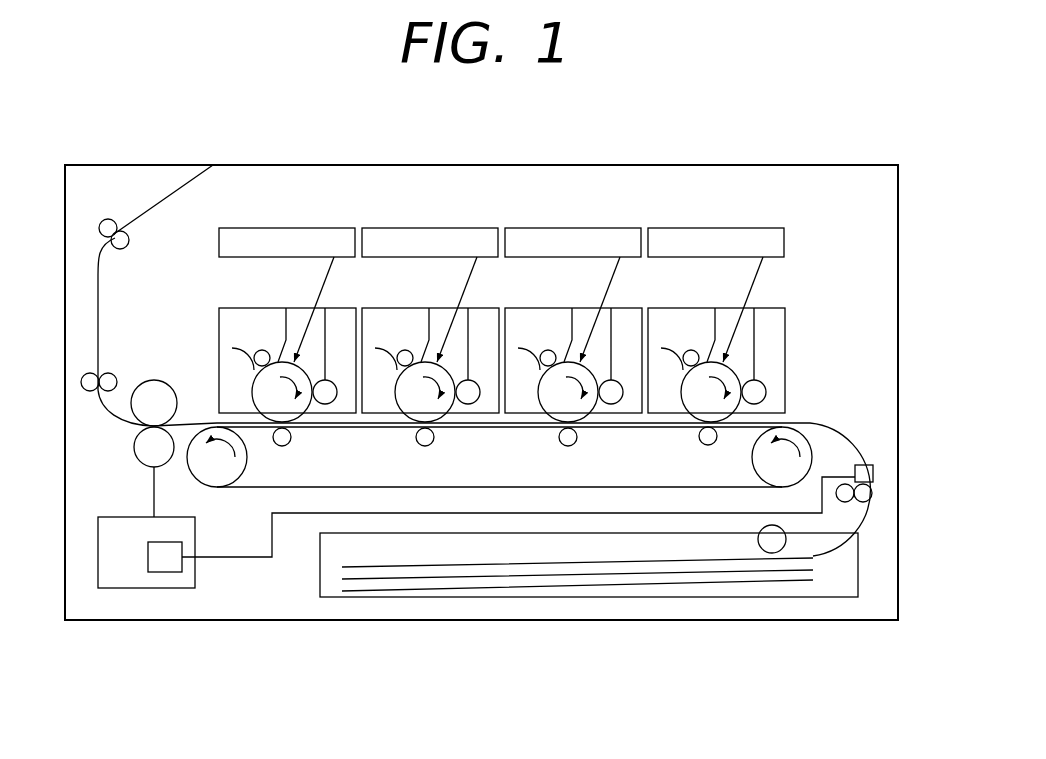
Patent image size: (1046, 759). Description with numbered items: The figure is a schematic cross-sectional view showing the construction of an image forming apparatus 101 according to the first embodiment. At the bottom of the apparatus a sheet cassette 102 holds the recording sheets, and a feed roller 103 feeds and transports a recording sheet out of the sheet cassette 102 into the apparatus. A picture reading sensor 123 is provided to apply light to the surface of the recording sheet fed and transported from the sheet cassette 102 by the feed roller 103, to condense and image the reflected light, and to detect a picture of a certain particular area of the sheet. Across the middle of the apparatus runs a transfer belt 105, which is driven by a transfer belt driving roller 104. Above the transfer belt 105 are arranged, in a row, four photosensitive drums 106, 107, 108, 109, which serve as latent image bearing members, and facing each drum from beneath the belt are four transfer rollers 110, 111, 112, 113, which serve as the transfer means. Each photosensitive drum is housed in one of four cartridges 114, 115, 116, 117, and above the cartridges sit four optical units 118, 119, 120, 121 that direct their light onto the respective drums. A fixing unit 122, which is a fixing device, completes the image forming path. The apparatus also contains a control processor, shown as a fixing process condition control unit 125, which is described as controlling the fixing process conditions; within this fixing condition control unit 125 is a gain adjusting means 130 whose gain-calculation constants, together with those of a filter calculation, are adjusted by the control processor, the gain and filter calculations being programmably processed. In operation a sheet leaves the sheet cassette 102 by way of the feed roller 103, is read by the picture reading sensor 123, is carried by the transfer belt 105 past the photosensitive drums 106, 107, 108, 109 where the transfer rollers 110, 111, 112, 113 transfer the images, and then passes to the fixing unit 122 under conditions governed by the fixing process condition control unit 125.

The image forming apparatus 101 is at (590, 165).
The sheet cassette 102 is at (428, 597).
The feed roller 103 is at (777, 553).
The transfer belt driving roller 104 is at (812, 424).
The transfer belt 105 is at (256, 489).
The photosensitive drum 106 is at (684, 408).
The photosensitive drum 107 is at (541, 408).
The photosensitive drum 108 is at (398, 408).
The photosensitive drum 109 is at (255, 408).
The transfer roller 110 is at (714, 445).
The transfer roller 111 is at (577, 437).
The transfer roller 112 is at (434, 437).
The transfer roller 113 is at (291, 437).
The cartridge 114 is at (677, 308).
The cartridge 115 is at (534, 308).
The cartridge 116 is at (391, 308).
The cartridge 117 is at (248, 308).
The optical unit 118 is at (733, 228).
The optical unit 119 is at (590, 228).
The optical unit 120 is at (447, 228).
The optical unit 121 is at (304, 228).
The fixing unit 122 is at (160, 380).
The picture reading sensor 123 is at (868, 465).
The fixing process condition control unit 125 is at (118, 588).
The gain adjusting means 130 is at (148, 557).